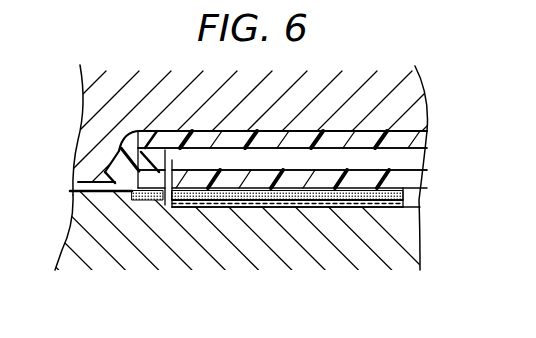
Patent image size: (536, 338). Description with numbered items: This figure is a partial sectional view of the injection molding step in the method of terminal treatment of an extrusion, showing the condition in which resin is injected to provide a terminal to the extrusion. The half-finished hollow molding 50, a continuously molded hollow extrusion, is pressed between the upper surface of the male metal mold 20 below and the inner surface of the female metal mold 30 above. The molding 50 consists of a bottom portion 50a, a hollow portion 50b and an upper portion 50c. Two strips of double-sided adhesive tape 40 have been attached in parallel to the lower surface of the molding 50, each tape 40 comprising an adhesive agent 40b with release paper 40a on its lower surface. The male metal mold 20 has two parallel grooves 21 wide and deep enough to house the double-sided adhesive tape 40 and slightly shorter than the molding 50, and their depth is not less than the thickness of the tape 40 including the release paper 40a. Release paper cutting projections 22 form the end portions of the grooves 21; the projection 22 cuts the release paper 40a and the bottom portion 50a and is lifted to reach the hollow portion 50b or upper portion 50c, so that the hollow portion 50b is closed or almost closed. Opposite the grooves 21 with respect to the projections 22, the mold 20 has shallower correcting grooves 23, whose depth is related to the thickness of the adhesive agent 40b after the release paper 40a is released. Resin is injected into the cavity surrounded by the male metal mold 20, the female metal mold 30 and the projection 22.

The male metal mold 20 is at (410, 232).
The grooves 21 is at (415, 202).
The release paper cutting projection 22 is at (172, 156).
The correcting grooves 23 is at (125, 192).
The female metal mold 30 is at (415, 70).
The double-sided adhesive tape 40 is at (351, 289).
The release paper 40a is at (268, 205).
The adhesive agent 40b is at (313, 205).
The half-finished hollow molding 50 is at (276, 154).
The bottom portion 50a is at (402, 174).
The hollow portion 50b is at (400, 154).
The upper portion 50c is at (420, 132).